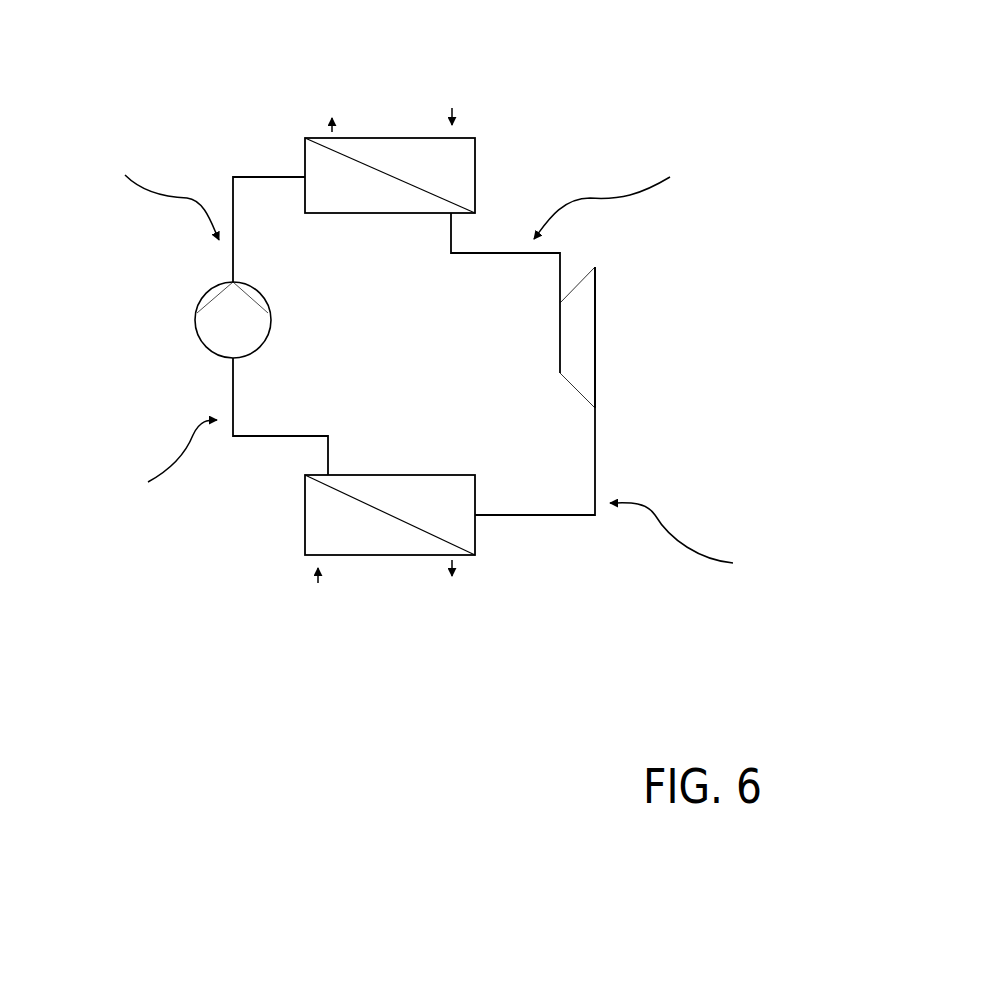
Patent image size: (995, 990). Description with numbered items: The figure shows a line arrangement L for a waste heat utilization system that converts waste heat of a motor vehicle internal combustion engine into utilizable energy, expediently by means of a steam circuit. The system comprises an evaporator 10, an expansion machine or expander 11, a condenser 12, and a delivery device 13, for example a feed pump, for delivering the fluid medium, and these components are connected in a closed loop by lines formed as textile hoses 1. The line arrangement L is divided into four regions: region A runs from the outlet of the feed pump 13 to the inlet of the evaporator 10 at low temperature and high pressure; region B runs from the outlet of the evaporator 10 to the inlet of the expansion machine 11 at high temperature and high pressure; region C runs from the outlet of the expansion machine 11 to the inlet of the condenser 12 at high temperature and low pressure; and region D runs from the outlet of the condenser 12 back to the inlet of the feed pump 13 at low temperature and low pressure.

The line arrangement L is at (152, 60).
The textile hose 1 is at (262, 177).
The evaporator 10 is at (389, 180).
The expansion machine 11 is at (656, 337).
The condenser 12 is at (415, 527).
The delivery device 13 is at (316, 336).